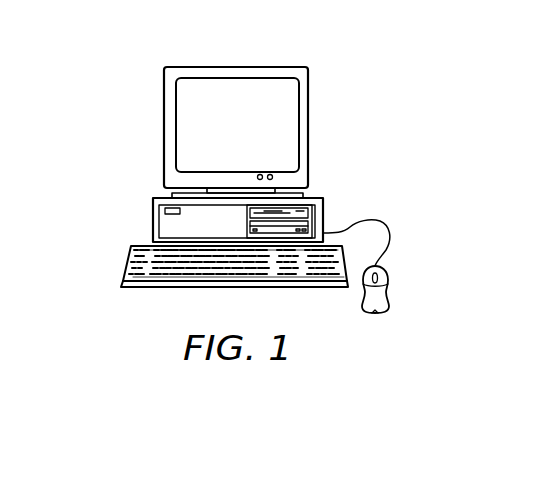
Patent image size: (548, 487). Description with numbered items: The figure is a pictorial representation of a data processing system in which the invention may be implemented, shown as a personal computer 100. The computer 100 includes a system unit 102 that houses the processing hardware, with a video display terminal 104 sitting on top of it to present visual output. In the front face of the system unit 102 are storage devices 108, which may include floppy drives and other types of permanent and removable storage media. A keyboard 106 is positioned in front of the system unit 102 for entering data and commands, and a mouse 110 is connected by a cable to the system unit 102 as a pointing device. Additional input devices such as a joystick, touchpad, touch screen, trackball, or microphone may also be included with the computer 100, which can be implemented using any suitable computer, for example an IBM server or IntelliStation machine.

The computer 100 is at (99, 112).
The system unit 102 is at (153, 220).
The video display terminal 104 is at (309, 127).
The keyboard 106 is at (149, 288).
The storage devices 108 is at (296, 214).
The mouse 110 is at (375, 313).